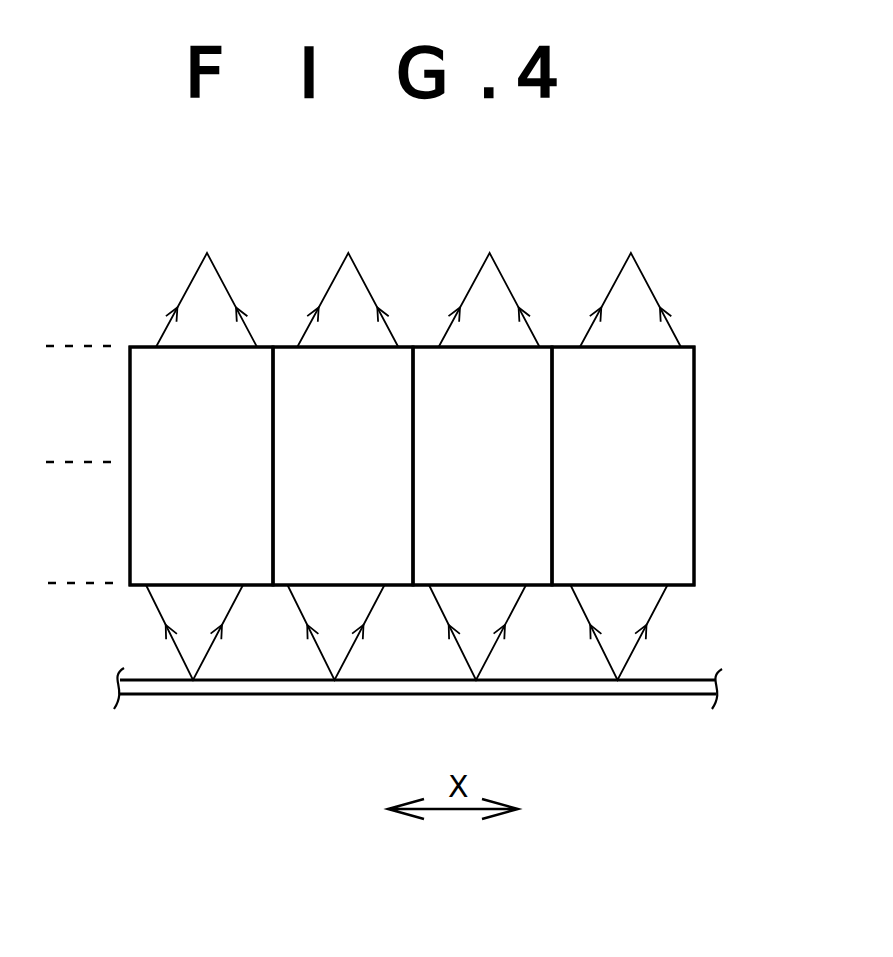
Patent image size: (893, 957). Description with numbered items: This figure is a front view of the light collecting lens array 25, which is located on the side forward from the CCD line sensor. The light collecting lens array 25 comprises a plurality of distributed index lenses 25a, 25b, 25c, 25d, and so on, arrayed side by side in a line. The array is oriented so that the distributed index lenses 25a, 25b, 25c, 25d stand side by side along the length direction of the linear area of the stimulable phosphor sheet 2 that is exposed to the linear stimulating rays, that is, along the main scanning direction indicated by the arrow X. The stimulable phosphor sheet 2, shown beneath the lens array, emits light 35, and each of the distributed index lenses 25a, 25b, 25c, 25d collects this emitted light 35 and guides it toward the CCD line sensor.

The light collecting lens array 25 is at (109, 372).
The distributed index lens 25a is at (673, 365).
The distributed index lens 25b is at (530, 365).
The distributed index lens 25c is at (400, 362).
The distributed index lens 25d is at (263, 360).
The emitted light 35 is at (651, 616).
The stimulable phosphor sheet 2 is at (653, 697).